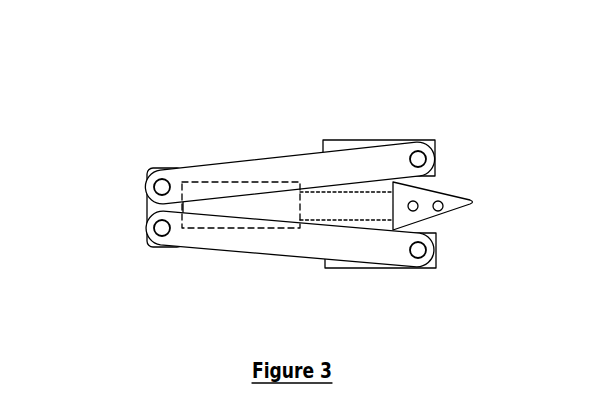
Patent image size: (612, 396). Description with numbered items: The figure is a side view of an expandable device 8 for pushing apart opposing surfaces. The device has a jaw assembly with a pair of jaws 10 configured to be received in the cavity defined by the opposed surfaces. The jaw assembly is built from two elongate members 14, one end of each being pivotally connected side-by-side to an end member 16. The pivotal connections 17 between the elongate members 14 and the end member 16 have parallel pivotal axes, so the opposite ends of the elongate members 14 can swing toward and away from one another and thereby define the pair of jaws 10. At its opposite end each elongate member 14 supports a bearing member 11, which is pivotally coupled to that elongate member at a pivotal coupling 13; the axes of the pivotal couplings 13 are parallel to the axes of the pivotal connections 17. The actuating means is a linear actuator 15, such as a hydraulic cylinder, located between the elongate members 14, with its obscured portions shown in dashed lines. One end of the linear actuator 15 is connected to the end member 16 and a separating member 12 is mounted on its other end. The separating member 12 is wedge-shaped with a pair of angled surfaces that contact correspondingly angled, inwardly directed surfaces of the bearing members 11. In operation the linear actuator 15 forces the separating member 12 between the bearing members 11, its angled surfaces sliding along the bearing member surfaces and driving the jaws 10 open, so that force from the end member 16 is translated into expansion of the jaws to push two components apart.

The expandable device 8 is at (177, 67).
The jaws 10 is at (452, 88).
The bearing member 11 is at (363, 138).
The separating member 12 is at (457, 199).
The pivotal coupling 13 is at (426, 163).
The elongate member 14 is at (193, 170).
The linear actuator 15 is at (273, 210).
The end member 16 is at (147, 207).
The pivotal connection 17 is at (160, 181).